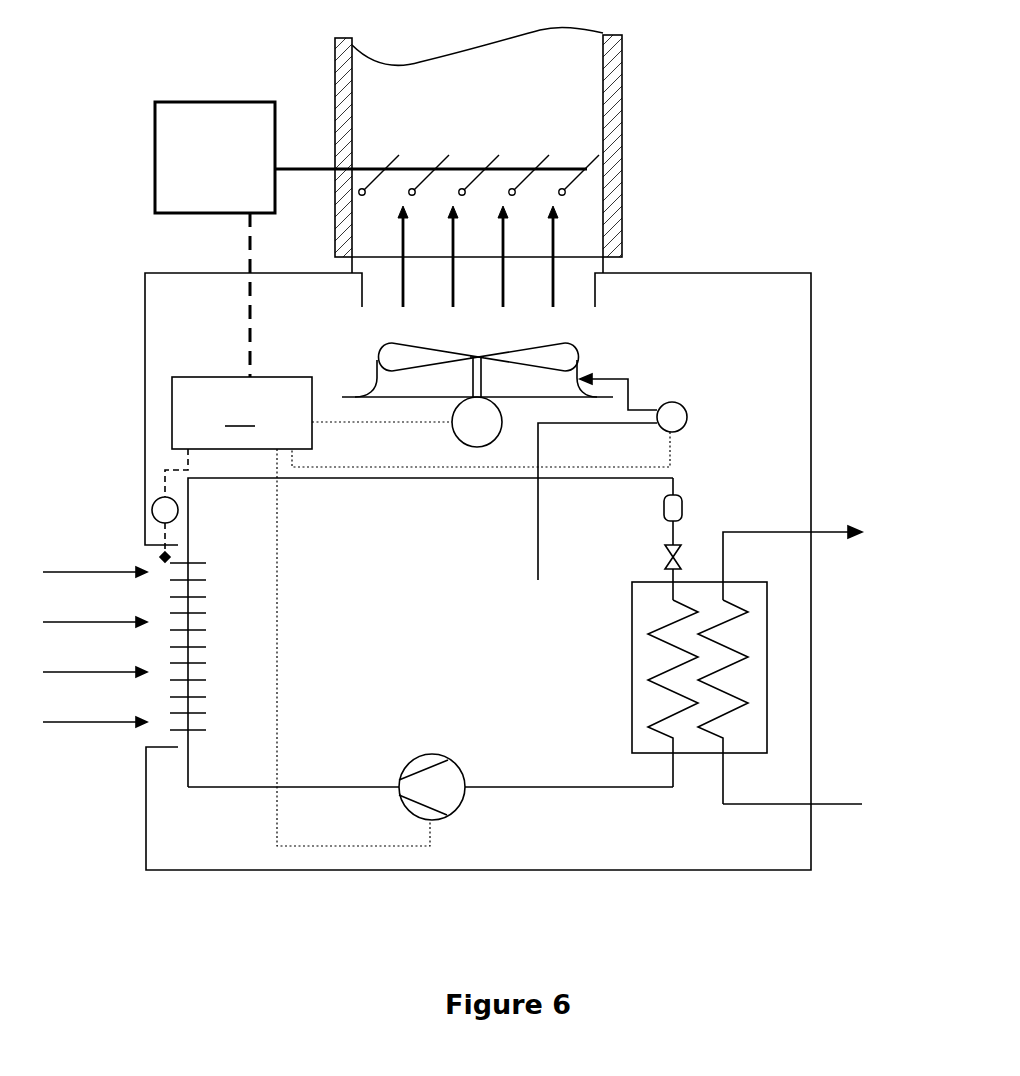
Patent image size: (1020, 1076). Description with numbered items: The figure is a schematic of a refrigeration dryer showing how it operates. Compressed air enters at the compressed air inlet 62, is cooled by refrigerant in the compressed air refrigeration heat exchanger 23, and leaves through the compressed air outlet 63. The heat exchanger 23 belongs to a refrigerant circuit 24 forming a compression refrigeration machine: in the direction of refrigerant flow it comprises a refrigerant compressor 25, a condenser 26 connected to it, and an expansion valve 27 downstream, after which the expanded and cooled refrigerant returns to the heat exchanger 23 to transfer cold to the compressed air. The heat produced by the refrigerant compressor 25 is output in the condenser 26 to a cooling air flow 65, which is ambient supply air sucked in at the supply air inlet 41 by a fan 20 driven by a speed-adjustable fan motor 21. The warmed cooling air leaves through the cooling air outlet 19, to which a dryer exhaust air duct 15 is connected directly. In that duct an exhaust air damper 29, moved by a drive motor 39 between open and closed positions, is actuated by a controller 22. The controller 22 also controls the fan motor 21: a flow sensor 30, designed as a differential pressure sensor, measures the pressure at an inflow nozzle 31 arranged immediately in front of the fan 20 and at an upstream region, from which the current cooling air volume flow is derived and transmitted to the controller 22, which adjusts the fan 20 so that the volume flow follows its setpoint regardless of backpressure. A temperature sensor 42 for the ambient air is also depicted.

The dryer exhaust air duct 15 is at (564, 95).
The cooling air outlet 19 is at (583, 281).
The fan 20 is at (577, 348).
The fan motor 21 is at (503, 410).
The controller 22 is at (312, 611).
The compressed air refrigeration heat exchanger 23 is at (706, 757).
The refrigerant circuit 24 is at (548, 786).
The refrigerant compressor 25 is at (430, 755).
The condenser 26 is at (212, 604).
The expansion valve 27 is at (685, 545).
The exhaust air damper 29 is at (590, 195).
The flow sensor 30 is at (690, 421).
The inflow nozzle 31 is at (348, 393).
The drive motor 39 is at (214, 102).
The supply air inlet 41 is at (163, 738).
The ambient air sensor/temperature sensor 42 is at (180, 505).
The compressed air inlet 62 is at (815, 802).
The compressed air outlet 63 is at (828, 535).
The cooling air flow 65 is at (83, 723).